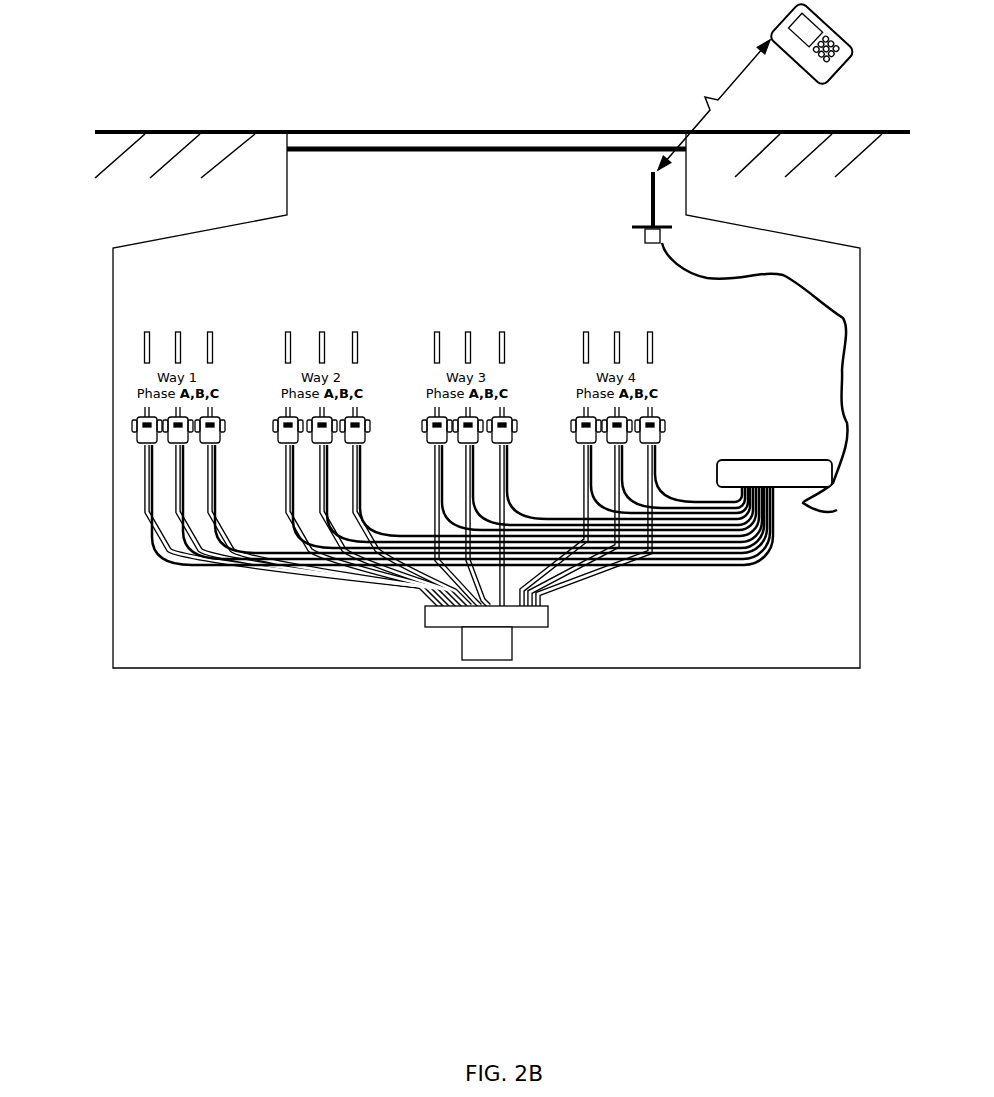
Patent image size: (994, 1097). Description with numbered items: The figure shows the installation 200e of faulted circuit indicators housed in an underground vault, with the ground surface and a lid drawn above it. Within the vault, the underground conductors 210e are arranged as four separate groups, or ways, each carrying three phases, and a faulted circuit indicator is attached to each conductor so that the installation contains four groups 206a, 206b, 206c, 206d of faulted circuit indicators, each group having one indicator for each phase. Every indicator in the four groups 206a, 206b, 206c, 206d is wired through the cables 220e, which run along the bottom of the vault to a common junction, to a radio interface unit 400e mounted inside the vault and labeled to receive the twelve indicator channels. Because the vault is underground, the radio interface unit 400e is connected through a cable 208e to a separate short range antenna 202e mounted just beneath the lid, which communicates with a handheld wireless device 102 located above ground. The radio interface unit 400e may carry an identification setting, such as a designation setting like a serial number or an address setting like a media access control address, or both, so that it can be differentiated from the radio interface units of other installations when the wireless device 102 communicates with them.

The wireless device 102 is at (845, 30).
The installation of faulted circuit indicators in underground vault 200e is at (113, 654).
The short range antenna 202e is at (651, 200).
The cable 208e is at (765, 278).
The underground conductors 210e is at (210, 334).
The first group of faulted circuit indicators 206a is at (217, 433).
The second group of faulted circuit indicators 206b is at (363, 445).
The third group of faulted circuit indicators 206c is at (509, 445).
The fourth group of faulted circuit indicators 206d is at (657, 438).
The cables 220e is at (222, 516).
The radio interface unit 400e is at (805, 460).